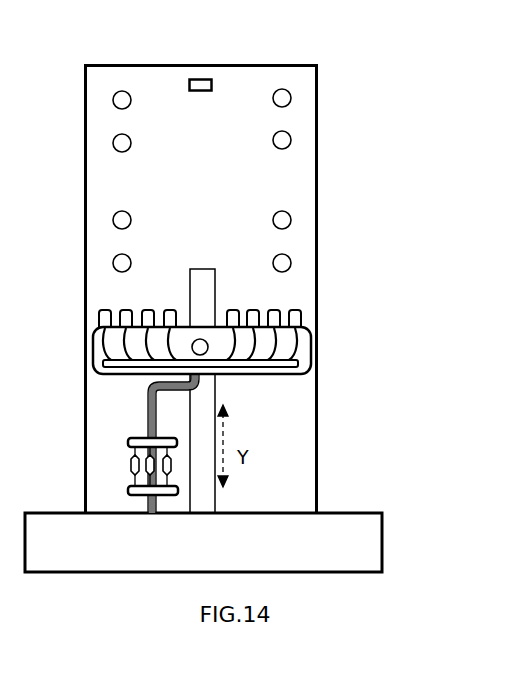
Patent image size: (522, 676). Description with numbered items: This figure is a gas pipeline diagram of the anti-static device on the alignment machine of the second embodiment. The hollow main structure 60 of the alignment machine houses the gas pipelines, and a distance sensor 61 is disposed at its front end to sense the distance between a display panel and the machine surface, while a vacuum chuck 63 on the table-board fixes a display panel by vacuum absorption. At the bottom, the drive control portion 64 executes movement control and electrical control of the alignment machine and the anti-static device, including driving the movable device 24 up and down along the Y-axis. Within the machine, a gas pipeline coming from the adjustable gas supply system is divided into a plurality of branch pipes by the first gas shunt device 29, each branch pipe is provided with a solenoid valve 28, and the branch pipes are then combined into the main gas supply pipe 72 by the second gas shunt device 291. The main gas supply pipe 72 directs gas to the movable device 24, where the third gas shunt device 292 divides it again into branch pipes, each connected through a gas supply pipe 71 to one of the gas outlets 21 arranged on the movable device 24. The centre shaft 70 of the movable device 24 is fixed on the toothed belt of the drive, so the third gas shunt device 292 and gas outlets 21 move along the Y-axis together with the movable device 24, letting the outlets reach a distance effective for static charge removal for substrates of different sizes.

The main structure 60 is at (318, 232).
The distance sensor 61 is at (201, 79).
The vacuum chuck 63 is at (290, 143).
The drive control portion 64 is at (365, 540).
The gas outlets 21 is at (298, 312).
The movable device 24 is at (100, 345).
The centre shaft 70 is at (193, 343).
The gas supply pipes 71 is at (290, 340).
The main gas supply pipe 72 is at (148, 392).
The third gas shunt device 292 is at (311, 370).
The second gas shunt device 291 is at (128, 441).
The solenoid valve 28 is at (130, 467).
The first gas shunt device 29 is at (128, 491).